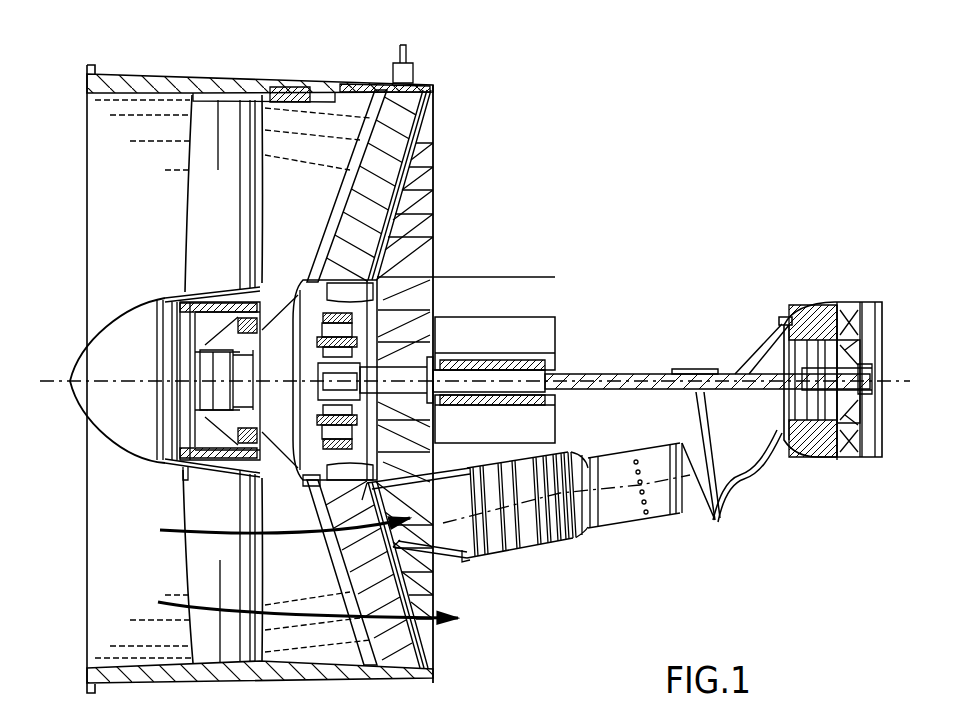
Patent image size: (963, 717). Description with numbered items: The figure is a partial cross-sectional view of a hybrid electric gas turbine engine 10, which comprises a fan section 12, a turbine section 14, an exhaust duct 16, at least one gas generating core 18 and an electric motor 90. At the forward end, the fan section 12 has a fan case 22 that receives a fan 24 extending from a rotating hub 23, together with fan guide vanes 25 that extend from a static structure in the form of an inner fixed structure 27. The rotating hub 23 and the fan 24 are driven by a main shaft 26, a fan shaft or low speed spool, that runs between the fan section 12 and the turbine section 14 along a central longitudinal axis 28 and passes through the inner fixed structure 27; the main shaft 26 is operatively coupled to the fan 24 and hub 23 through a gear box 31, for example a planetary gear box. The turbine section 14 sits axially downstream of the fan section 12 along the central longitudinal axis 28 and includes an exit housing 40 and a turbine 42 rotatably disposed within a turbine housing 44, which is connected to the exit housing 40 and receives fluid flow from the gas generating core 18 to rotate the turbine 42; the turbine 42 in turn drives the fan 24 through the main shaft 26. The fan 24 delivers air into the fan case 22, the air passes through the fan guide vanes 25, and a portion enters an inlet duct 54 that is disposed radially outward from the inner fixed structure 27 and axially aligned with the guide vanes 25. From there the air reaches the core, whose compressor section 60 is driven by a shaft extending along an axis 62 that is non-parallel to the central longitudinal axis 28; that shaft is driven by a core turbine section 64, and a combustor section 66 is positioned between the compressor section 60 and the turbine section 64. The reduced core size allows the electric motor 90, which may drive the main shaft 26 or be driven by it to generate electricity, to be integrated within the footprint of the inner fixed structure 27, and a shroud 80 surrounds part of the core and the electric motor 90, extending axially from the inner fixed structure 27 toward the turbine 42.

The hybrid electric gas turbine engine 10 is at (790, 140).
The fan section 12 is at (440, 76).
The turbine section 14 is at (845, 292).
The exhaust duct 16 is at (748, 496).
The gas generating core 18 is at (594, 537).
The fan case 22 is at (352, 82).
The rotating hub 23 is at (182, 292).
The fan 24 is at (183, 208).
The fan guide vanes 25 is at (322, 220).
The main shaft 26 is at (707, 397).
The inner fixed structure 27 is at (305, 490).
The central longitudinal axis 28 is at (52, 383).
The gear box 31 is at (308, 318).
The exit housing 40 is at (870, 463).
The turbine 42 is at (845, 332).
The turbine housing 44 is at (823, 463).
The inlet duct 54 is at (465, 559).
The compressor section 60 is at (568, 556).
The axis 62 is at (460, 515).
The turbine section 64 is at (683, 517).
The combustor section 66 is at (642, 518).
The shroud 80 is at (507, 272).
The electric motor 90 is at (548, 316).